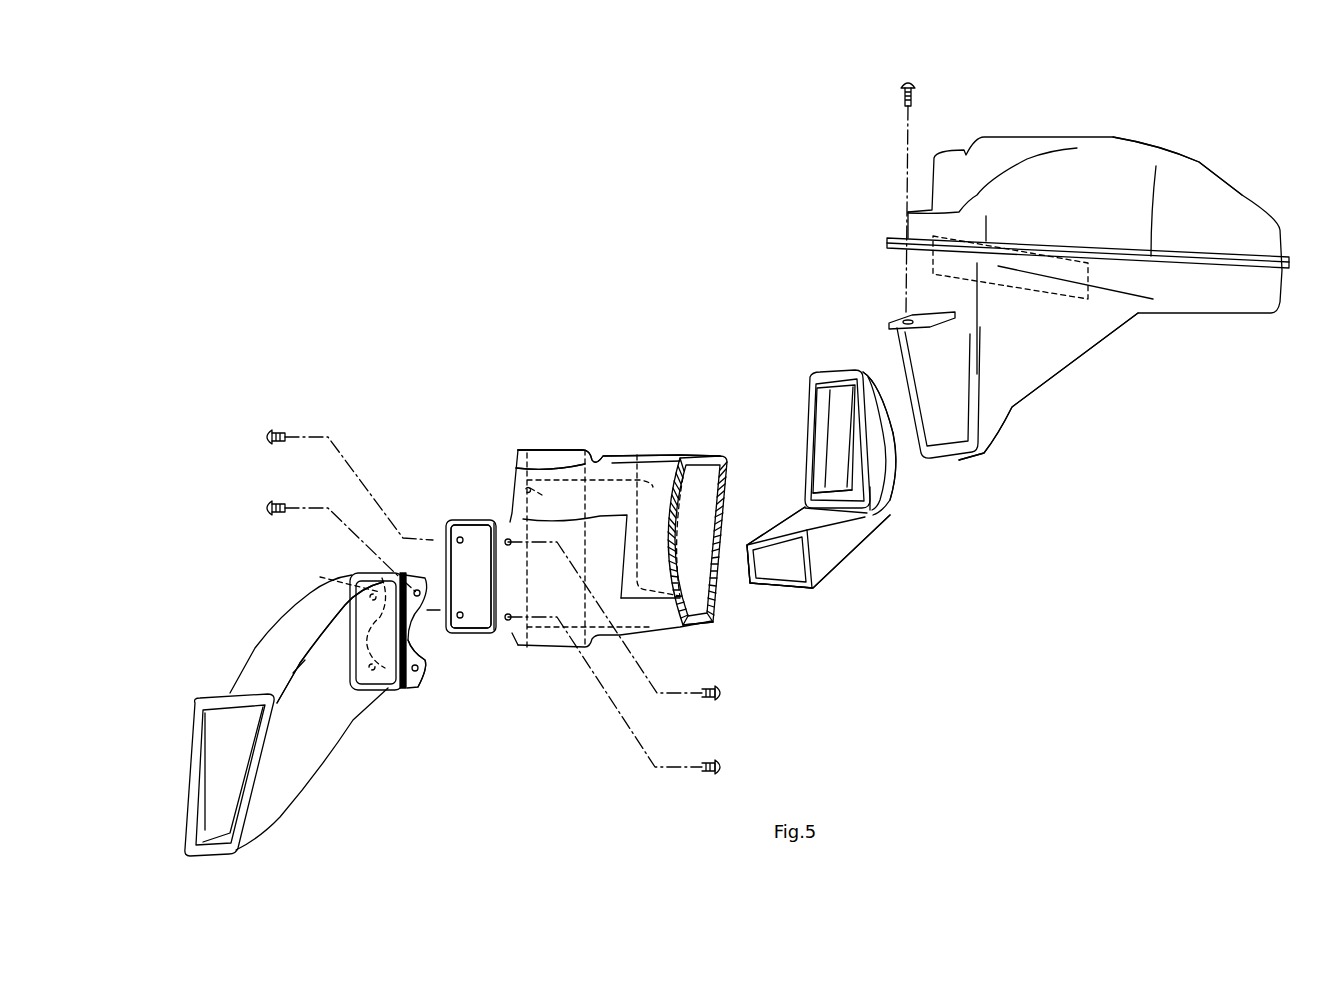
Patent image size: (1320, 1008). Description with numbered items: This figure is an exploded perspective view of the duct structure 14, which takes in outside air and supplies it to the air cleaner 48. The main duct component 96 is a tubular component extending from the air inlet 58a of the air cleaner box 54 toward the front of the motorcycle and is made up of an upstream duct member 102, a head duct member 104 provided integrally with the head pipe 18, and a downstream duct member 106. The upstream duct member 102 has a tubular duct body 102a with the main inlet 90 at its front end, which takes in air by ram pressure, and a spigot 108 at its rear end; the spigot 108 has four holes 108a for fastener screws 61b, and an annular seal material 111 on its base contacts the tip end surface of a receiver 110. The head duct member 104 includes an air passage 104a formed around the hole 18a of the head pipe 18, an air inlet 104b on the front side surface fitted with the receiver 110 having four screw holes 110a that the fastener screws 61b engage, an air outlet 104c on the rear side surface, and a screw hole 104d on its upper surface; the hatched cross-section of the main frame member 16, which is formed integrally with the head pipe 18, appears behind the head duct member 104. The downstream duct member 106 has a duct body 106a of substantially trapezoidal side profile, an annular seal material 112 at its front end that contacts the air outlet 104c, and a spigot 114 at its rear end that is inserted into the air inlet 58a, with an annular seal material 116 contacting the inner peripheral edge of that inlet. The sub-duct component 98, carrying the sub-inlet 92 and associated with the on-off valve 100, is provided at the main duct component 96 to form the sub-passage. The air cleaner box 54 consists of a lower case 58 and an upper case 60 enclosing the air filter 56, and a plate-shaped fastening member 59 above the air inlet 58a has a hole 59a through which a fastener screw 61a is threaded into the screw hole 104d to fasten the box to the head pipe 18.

The duct structure 14 is at (540, 343).
The main frame member 16 is at (717, 607).
The head pipe 18 is at (567, 450).
The hole of the head pipe 18a is at (543, 450).
The air cleaner 48 is at (1117, 135).
The air cleaner box 54 is at (897, 220).
The air filter 56 is at (1023, 284).
The lower case 58 is at (1095, 345).
The air inlet 58a is at (940, 410).
The fastening member 59 is at (899, 322).
The hole 59a is at (906, 319).
The upper case 60 is at (1194, 162).
The fastener screw 61a is at (911, 80).
The fastener screw 61b is at (268, 430).
The main inlet 90 is at (222, 773).
The sub-inlet 92 is at (787, 567).
The main duct component 96 is at (655, 367).
The sub-duct component 98 is at (845, 563).
The on-off valve 100 is at (795, 568).
The upstream duct member 102 is at (288, 627).
The duct body 102a is at (283, 658).
The head duct member 104 is at (610, 452).
The air passage 104a is at (505, 467).
The air inlet 104b is at (463, 565).
The air outlet 104c is at (683, 520).
The screw hole 104d is at (640, 478).
The downstream duct member 106 is at (817, 372).
The duct body 106a is at (883, 487).
The spigot 108 is at (412, 677).
The hole 108a is at (372, 665).
The receiver 110 is at (480, 635).
The screw hole 110a is at (460, 537).
The annular seal material 111 is at (423, 658).
The annular seal material 112 is at (802, 493).
The spigot 114 is at (900, 457).
The annular seal material 116 is at (897, 473).